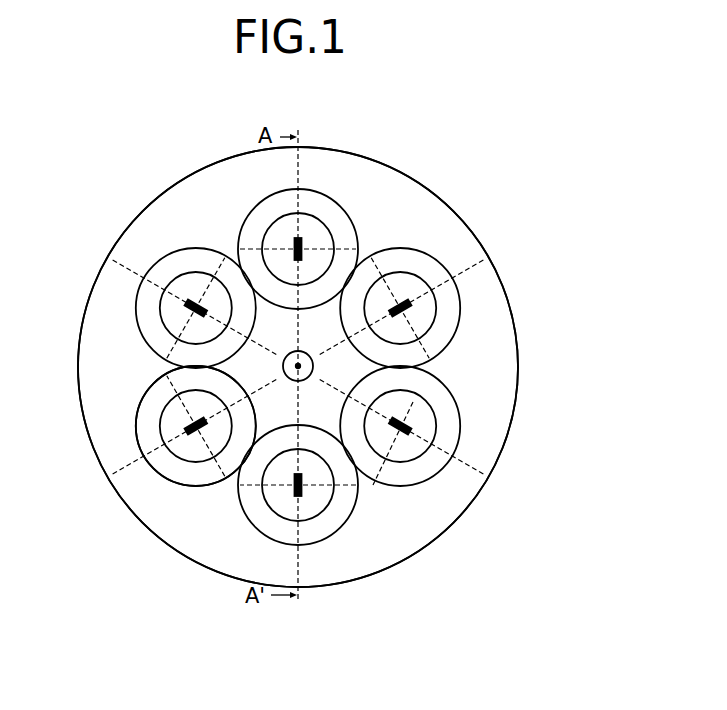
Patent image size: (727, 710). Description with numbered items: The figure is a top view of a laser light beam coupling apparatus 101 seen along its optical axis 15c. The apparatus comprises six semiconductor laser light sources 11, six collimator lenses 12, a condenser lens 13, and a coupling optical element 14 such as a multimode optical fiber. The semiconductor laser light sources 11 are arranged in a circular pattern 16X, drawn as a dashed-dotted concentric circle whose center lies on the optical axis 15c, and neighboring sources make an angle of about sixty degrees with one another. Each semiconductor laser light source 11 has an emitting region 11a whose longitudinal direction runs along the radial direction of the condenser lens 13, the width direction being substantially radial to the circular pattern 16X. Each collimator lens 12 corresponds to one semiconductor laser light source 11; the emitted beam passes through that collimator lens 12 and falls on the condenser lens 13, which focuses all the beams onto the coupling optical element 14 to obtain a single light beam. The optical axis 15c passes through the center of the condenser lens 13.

The laser light beam coupling apparatus 101 is at (532, 140).
The semiconductor laser light source 11 is at (187, 464).
The emitting region 11a is at (162, 473).
The collimator lens 12 is at (208, 486).
The condenser lens 13 is at (380, 571).
The coupling optical element 14 is at (309, 354).
The optical axis 15c is at (191, 249).
The circular pattern 16X is at (373, 485).